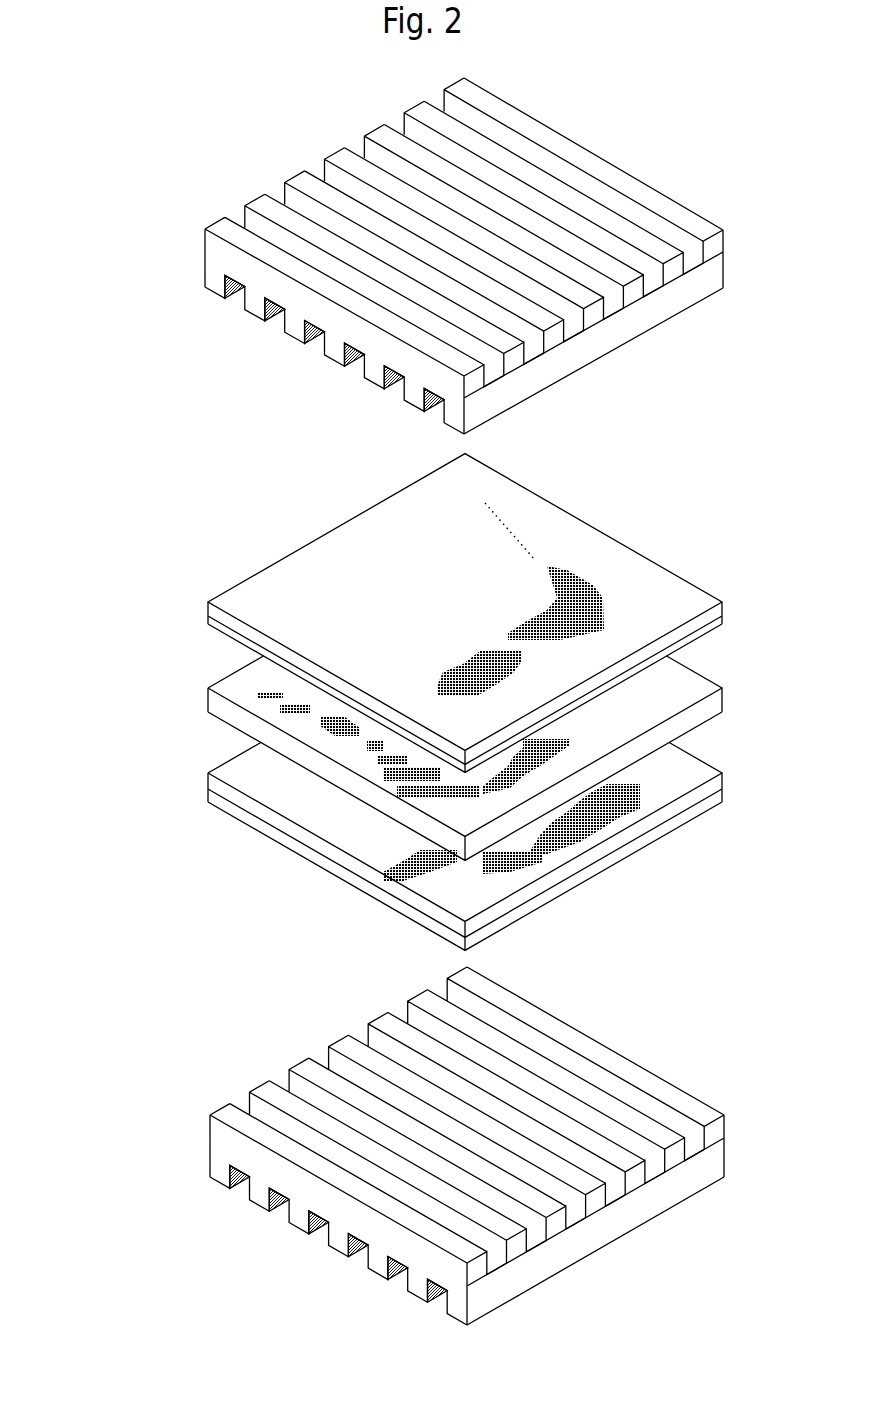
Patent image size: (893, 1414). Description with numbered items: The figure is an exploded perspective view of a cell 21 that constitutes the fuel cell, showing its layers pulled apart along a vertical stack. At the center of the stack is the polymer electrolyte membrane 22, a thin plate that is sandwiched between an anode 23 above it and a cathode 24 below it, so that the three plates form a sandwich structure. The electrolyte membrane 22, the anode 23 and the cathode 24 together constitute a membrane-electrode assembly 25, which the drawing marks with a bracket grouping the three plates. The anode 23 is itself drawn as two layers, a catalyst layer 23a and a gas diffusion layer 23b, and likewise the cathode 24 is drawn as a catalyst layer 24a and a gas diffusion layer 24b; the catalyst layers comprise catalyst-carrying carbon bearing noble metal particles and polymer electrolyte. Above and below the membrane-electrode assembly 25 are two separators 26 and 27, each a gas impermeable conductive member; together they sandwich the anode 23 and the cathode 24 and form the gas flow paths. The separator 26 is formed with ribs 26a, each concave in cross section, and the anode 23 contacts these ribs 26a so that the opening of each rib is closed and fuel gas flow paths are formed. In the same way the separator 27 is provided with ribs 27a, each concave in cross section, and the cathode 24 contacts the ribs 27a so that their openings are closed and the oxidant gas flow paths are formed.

The cell 21 is at (47, 168).
The polymer electrolyte membrane 22 is at (207, 703).
The anode 23 is at (116, 575).
The catalyst layer 23a is at (207, 620).
The gas diffusion layer 23b is at (207, 604).
The cathode 24 is at (116, 753).
The catalyst layer 24a is at (207, 775).
The gas diffusion layer 24b is at (207, 793).
The membrane-electrode assembly 25 is at (70, 592).
The separator 26 is at (203, 256).
The ribs 26a is at (280, 322).
The separator 27 is at (725, 1157).
The ribs 27a is at (690, 1112).